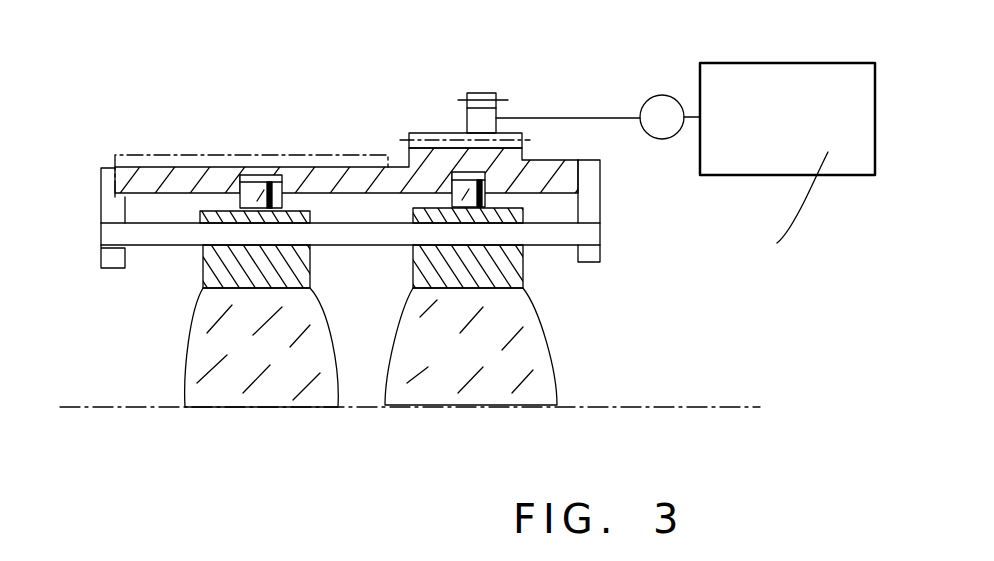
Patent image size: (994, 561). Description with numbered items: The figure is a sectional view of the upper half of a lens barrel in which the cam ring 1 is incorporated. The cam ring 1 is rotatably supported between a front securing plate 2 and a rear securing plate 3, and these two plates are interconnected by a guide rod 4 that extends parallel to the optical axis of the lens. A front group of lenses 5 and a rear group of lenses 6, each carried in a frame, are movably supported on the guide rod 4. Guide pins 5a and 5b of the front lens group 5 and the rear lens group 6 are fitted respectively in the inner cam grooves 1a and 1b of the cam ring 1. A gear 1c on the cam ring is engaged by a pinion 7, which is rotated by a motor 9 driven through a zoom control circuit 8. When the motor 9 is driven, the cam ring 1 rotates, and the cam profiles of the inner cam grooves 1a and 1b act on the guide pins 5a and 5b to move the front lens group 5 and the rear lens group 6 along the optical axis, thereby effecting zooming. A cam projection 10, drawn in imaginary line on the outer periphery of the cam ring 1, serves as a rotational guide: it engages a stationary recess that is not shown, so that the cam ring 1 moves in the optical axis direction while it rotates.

The cam ring 1 is at (168, 178).
The inner cam groove 1a is at (244, 193).
The inner cam groove 1b is at (437, 187).
The gear 1c is at (427, 133).
The front securing plate 2 is at (108, 167).
The rear securing plate 3 is at (597, 207).
The guide rod 4 is at (557, 235).
The front group of lenses 5 is at (235, 395).
The guide pin 5a is at (275, 178).
The guide pin 5b is at (450, 188).
The rear group of lenses 6 is at (450, 392).
The pinion 7 is at (487, 122).
The zoom control circuit 8 is at (800, 63).
The motor 9 is at (660, 95).
The cam projection 10 is at (203, 160).